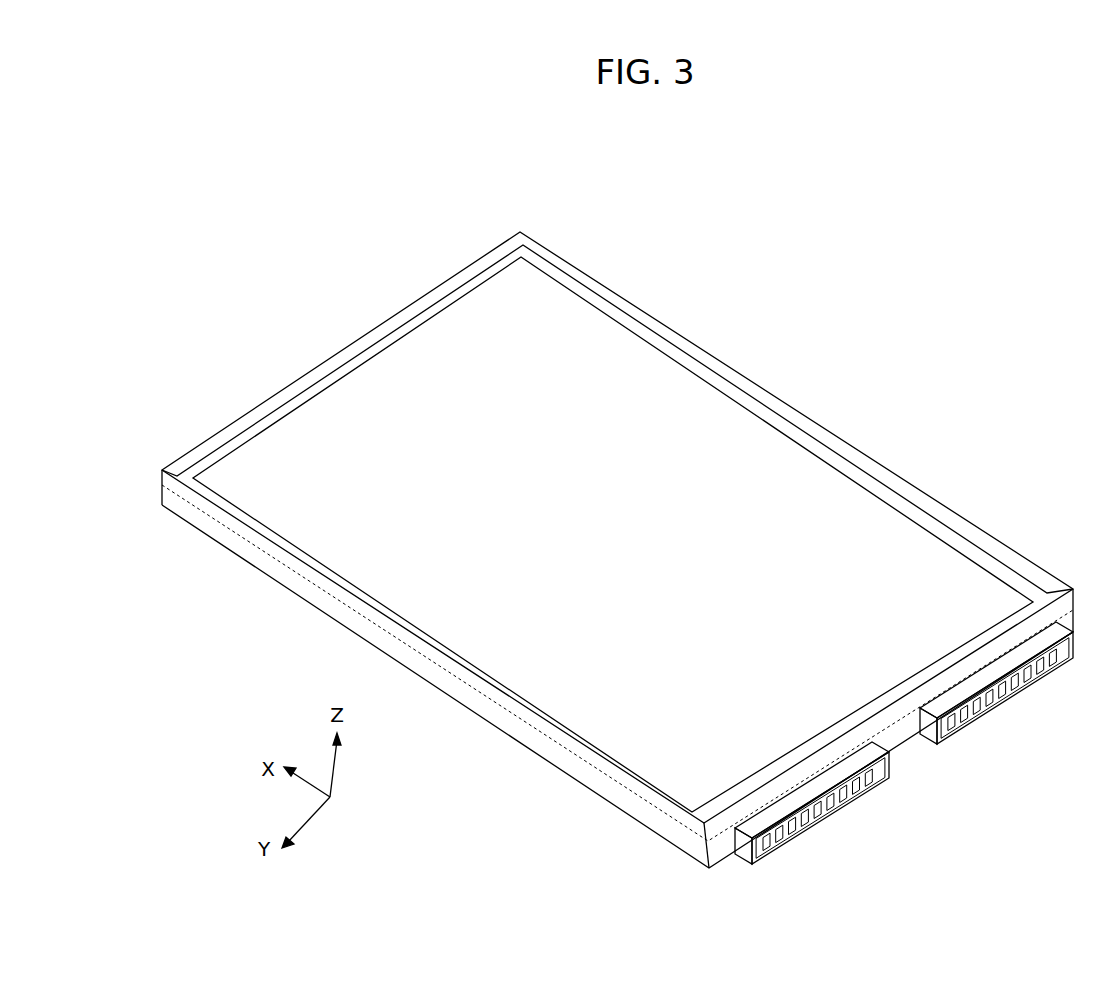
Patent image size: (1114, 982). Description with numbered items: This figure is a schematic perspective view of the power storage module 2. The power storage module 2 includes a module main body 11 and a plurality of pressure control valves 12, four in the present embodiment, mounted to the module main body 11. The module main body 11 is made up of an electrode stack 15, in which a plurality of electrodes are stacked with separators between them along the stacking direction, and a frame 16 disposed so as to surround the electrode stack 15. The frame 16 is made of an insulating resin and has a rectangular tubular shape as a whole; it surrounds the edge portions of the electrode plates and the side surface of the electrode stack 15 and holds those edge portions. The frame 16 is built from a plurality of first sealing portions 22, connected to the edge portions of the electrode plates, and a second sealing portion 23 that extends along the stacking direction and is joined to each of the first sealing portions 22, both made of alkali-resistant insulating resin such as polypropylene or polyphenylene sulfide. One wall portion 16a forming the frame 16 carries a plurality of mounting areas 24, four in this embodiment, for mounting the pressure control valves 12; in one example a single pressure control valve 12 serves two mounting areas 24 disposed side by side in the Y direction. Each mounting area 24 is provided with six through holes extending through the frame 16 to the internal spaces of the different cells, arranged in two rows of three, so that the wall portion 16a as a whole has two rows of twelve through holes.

The power storage module 2 is at (812, 282).
The module main body 11 is at (848, 419).
The electrode stack 15 is at (752, 447).
The frame 16 is at (1020, 440).
The first sealing portion 22 is at (943, 532).
The second sealing portion 23 is at (983, 543).
The wall portion 16a is at (897, 735).
The pressure control valve 12 is at (1050, 675).
The mounting area 24 is at (1042, 635).